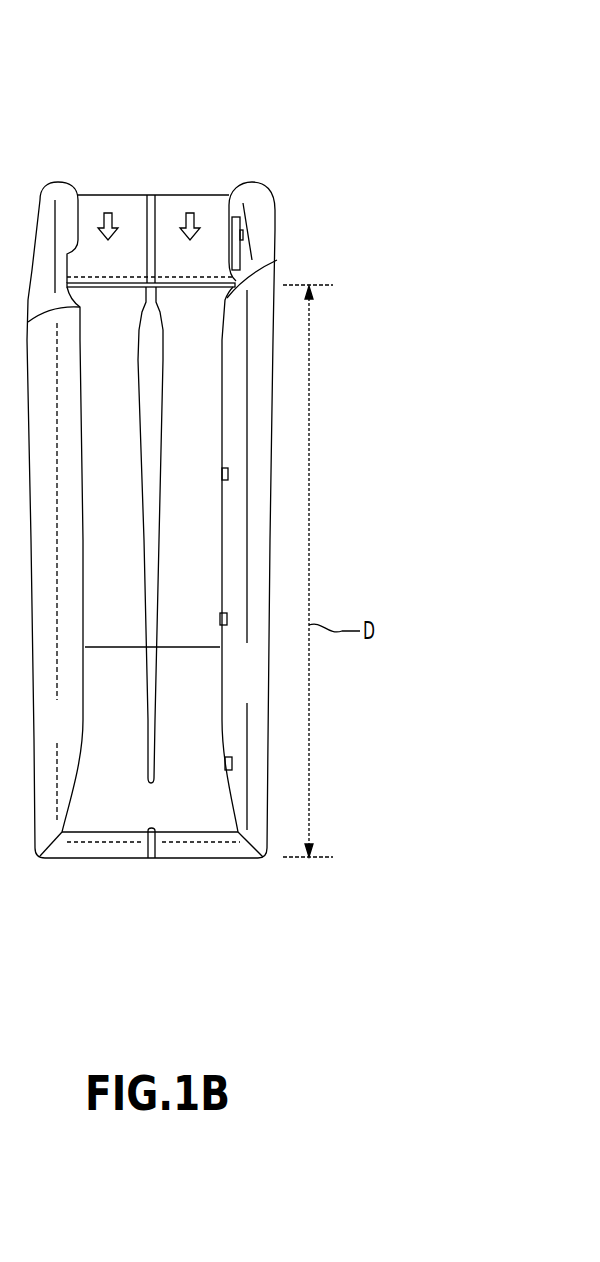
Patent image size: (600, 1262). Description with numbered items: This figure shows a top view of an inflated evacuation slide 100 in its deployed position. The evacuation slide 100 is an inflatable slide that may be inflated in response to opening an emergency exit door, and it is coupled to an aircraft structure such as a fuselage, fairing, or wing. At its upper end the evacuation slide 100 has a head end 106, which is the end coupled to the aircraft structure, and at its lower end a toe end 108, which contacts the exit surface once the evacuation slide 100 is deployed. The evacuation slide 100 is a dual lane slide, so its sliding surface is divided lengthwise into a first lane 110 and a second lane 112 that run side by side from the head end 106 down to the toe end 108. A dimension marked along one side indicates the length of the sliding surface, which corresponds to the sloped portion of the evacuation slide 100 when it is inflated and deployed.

The evacuation slide 100 is at (258, 492).
The head end 106 is at (144, 118).
The toe end 108 is at (168, 902).
The first lane 110 is at (123, 503).
The second lane 112 is at (201, 503).